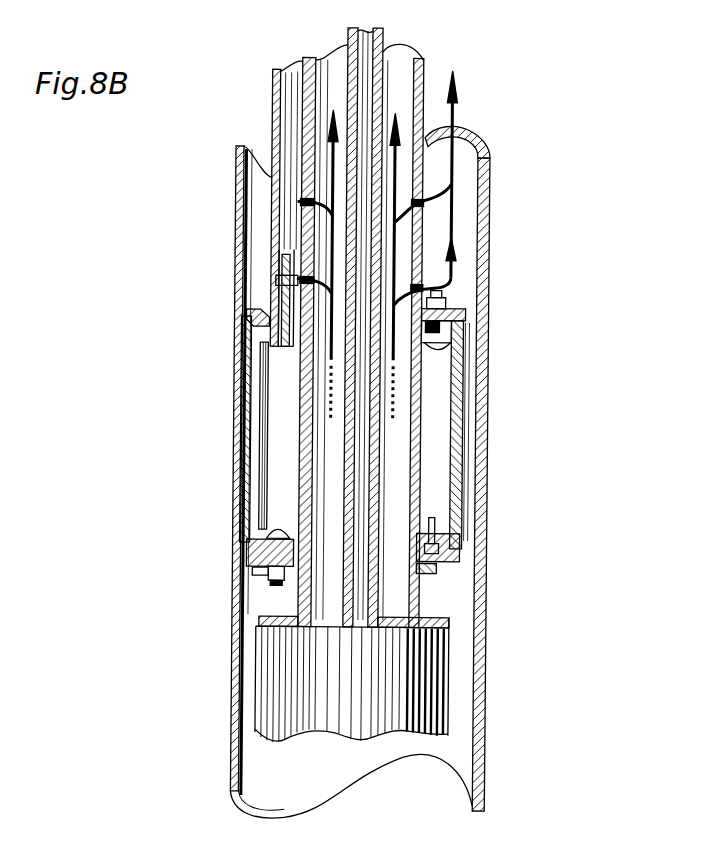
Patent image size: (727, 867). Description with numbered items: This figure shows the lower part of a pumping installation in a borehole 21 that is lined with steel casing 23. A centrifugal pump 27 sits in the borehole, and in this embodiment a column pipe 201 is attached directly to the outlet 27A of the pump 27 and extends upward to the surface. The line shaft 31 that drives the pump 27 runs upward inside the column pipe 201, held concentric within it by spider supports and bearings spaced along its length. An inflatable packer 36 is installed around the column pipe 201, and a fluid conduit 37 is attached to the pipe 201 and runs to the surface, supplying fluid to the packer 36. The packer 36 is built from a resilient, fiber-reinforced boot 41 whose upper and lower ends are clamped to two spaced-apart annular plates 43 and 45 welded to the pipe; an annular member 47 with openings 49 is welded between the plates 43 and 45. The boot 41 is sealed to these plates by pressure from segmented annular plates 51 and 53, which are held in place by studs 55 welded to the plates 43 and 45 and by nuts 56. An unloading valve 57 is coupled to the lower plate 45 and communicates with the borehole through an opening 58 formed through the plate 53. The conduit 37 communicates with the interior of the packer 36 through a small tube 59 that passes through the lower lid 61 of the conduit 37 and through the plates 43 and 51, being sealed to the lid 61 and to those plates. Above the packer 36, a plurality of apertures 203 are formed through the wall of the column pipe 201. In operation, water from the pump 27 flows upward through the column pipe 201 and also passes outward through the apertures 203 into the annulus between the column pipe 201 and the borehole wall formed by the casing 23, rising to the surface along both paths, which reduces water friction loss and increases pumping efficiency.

The borehole 21 is at (466, 153).
The steel casing 23 is at (484, 196).
The centrifugal pump 27 is at (285, 677).
The pump outlet 27A is at (440, 600).
The line shaft 31 is at (345, 37).
The inflatable packer 36 is at (462, 266).
The fluid conduit 37 is at (272, 90).
The boot 41 is at (476, 540).
The upper annular plate 43 is at (445, 372).
The lower annular plate 45 is at (283, 538).
The annular member 47 is at (256, 405).
The openings 49 is at (262, 363).
The upper clamping plate 51 is at (262, 312).
The lower clamping plate 53 is at (240, 562).
The studs 55 is at (277, 512).
The nuts 56 is at (262, 578).
The unloading valve 57 is at (440, 524).
The opening 58 is at (440, 578).
The small tube 59 is at (280, 284).
The lower lid 61 is at (288, 262).
The column pipe 201 is at (422, 63).
The apertures 203 is at (427, 209).